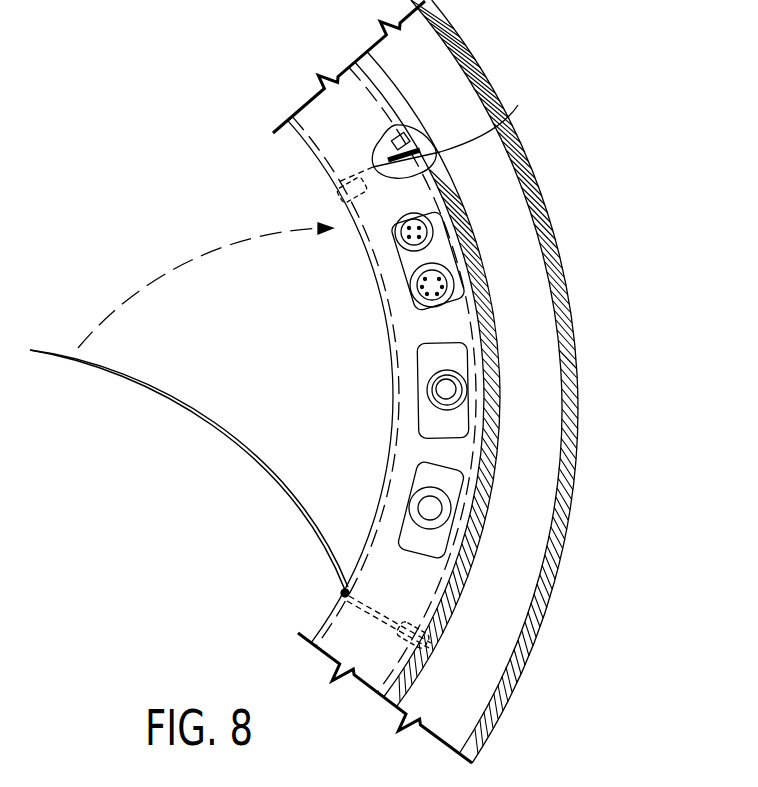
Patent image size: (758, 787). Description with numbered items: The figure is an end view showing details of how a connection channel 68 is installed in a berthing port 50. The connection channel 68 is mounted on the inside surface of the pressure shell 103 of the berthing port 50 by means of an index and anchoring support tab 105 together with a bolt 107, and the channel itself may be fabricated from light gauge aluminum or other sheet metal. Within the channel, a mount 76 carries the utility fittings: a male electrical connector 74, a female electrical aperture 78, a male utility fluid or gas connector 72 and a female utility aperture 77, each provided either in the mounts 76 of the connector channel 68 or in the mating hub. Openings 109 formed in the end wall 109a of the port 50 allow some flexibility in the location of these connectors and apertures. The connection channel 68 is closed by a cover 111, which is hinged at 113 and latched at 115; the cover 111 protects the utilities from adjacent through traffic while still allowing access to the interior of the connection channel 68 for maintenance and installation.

The berthing port 50 is at (567, 230).
The connection channel 68 is at (294, 139).
The male utility fluid or gas connector 72 is at (447, 390).
The male electrical connector 74 is at (395, 237).
The mount 76 is at (440, 252).
The female utility aperture 77 is at (430, 508).
The female electrical aperture 78 is at (447, 282).
The pressure shell 103 is at (527, 210).
The index and anchoring support tab 105 is at (415, 140).
The bolt 107 is at (445, 139).
The opening 109 is at (418, 282).
The end wall 109a is at (403, 330).
The cover 111 is at (238, 452).
The hinge 113 is at (343, 593).
The latch 115 is at (320, 190).